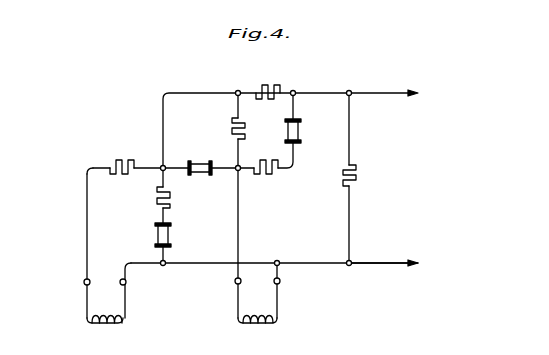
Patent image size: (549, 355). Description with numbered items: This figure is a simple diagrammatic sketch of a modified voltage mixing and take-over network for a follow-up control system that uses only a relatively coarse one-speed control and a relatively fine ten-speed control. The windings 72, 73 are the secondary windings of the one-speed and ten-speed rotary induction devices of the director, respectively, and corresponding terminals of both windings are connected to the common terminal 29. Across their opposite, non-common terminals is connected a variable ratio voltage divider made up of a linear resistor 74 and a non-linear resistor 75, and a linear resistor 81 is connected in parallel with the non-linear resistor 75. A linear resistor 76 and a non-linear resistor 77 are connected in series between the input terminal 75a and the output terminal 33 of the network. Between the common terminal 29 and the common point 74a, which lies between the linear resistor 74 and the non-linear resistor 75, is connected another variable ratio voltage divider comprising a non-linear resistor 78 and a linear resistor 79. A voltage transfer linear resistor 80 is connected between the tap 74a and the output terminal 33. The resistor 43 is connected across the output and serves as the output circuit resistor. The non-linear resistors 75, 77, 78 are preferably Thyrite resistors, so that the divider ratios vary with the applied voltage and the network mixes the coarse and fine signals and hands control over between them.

The common terminal 29 is at (390, 268).
The output terminal 33 is at (349, 93).
The output circuit resistor 43 is at (357, 166).
The winding 72 is at (255, 313).
The winding 73 is at (102, 313).
The linear resistor 74 is at (129, 178).
The common point 74a is at (161, 166).
The non-linear resistor 75 is at (199, 162).
The input terminal 75a is at (240, 166).
The linear resistor 76 is at (269, 178).
The non-linear resistor 77 is at (301, 128).
The non-linear resistor 78 is at (172, 235).
The linear resistor 79 is at (171, 196).
The voltage transfer linear resistor 80 is at (261, 88).
The linear resistor 81 is at (232, 130).